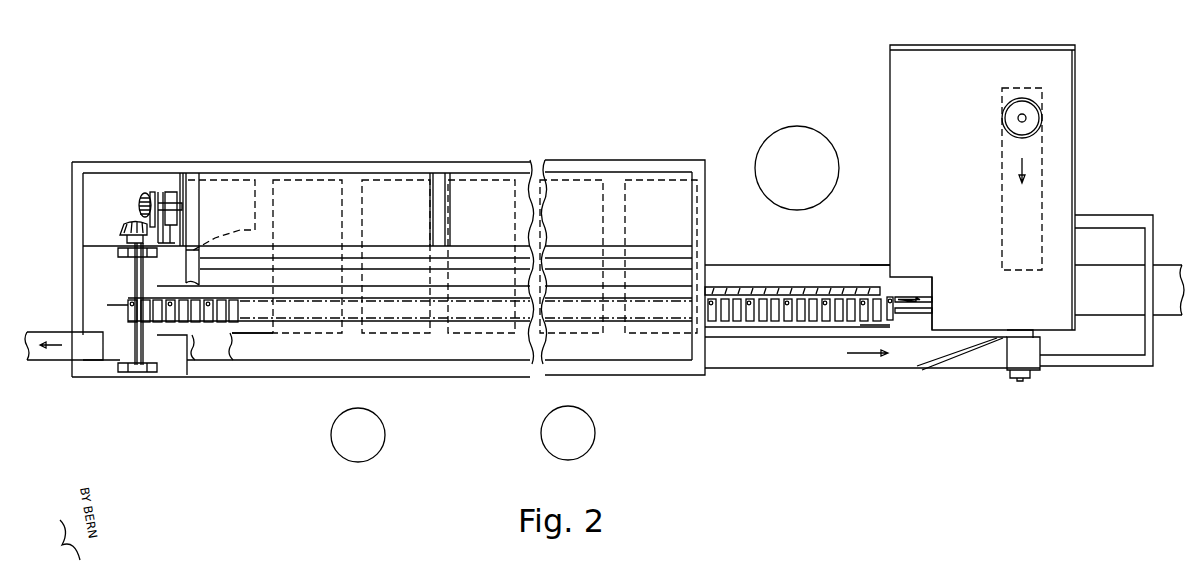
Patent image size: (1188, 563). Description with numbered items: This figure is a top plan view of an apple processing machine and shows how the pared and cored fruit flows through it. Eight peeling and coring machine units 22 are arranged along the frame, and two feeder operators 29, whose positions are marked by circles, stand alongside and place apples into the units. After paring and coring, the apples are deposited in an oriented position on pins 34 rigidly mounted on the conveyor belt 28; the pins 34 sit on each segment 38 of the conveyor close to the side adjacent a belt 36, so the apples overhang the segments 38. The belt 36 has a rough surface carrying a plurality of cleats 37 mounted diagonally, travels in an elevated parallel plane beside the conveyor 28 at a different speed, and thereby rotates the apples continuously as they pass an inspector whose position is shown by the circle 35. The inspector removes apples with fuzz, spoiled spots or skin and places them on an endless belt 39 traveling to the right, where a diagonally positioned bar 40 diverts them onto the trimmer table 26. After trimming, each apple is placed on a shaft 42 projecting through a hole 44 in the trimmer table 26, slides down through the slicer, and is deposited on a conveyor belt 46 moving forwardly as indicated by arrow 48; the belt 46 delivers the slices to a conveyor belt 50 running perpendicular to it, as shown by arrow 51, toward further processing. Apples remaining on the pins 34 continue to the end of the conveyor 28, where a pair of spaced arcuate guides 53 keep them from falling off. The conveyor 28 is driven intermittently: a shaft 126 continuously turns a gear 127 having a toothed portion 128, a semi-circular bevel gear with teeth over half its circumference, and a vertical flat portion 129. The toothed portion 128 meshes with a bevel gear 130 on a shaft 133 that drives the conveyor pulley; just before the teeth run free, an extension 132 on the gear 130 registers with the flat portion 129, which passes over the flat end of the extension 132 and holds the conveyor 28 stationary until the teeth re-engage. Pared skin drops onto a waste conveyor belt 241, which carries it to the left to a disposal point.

The peeling and coring machine units 22 is at (637, 180).
The trimmer table 26 is at (1055, 205).
The conveyor belt 28 is at (896, 326).
The feeder operators 29 is at (603, 425).
The pins 34 is at (120, 310).
The inspector 35 is at (797, 168).
The belt 36 is at (748, 286).
The cleats 37 is at (778, 289).
The segment 38 is at (898, 300).
The endless belt 39 is at (812, 362).
The diagonally positioned bar 40 is at (973, 352).
The shaft 42 is at (1027, 118).
The hole 44 is at (1040, 103).
The conveyor belt 46 is at (1042, 170).
The arrow 48 is at (1020, 165).
The conveyor belt 50 is at (153, 283).
The arrow 51 is at (1122, 288).
The arcuate guides 53 is at (917, 287).
The shaft 126 is at (165, 200).
The gear 127 is at (155, 197).
The toothed portion 128 is at (143, 195).
The vertical flat portion 129 is at (155, 232).
The bevel gear 130 is at (128, 225).
The extension 132 is at (147, 235).
The shaft 133 is at (140, 340).
The conveyor belt 241 is at (62, 365).